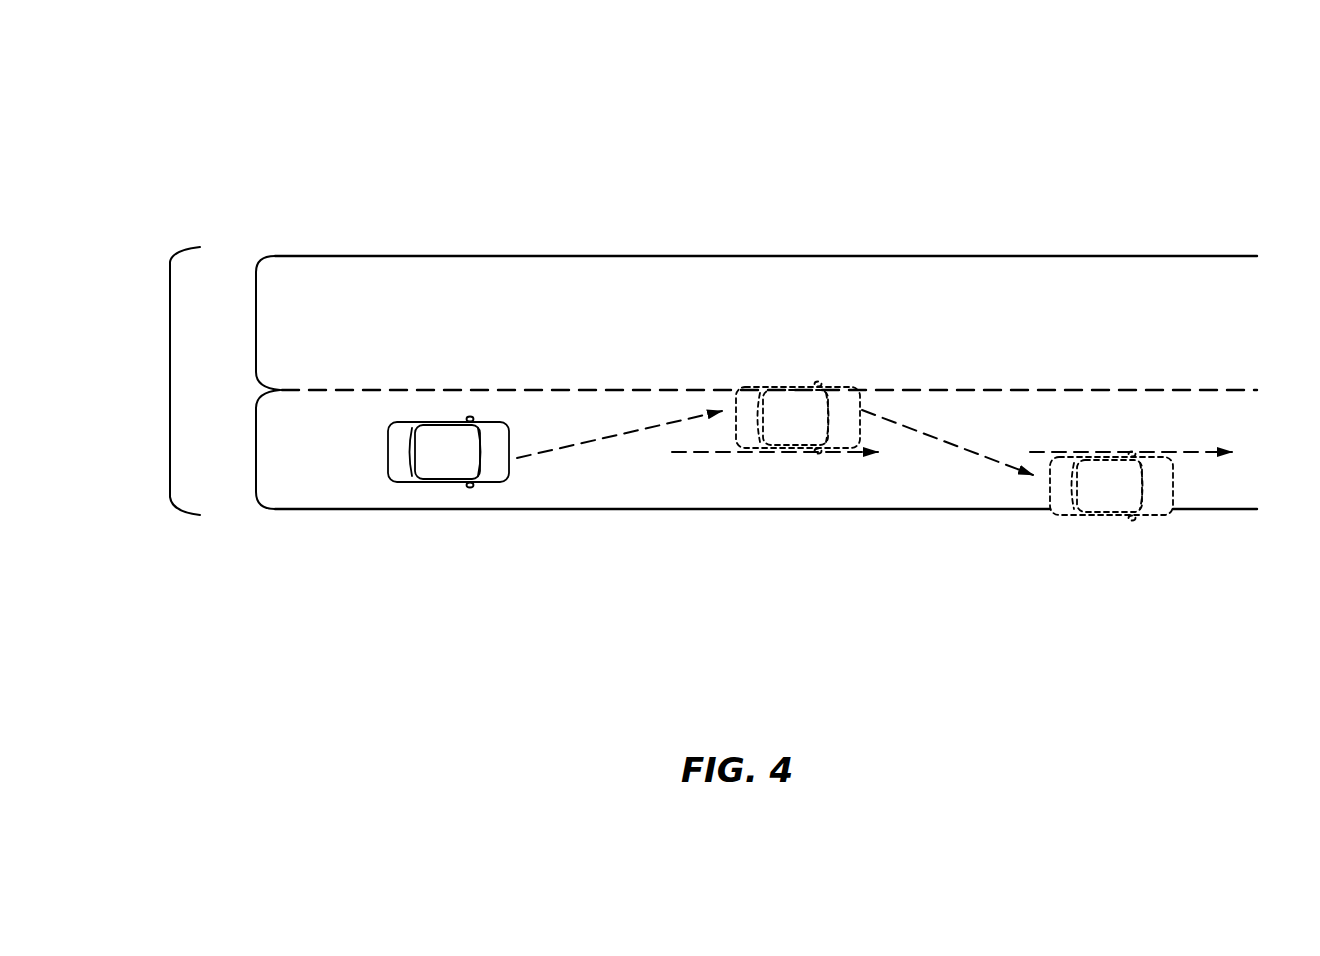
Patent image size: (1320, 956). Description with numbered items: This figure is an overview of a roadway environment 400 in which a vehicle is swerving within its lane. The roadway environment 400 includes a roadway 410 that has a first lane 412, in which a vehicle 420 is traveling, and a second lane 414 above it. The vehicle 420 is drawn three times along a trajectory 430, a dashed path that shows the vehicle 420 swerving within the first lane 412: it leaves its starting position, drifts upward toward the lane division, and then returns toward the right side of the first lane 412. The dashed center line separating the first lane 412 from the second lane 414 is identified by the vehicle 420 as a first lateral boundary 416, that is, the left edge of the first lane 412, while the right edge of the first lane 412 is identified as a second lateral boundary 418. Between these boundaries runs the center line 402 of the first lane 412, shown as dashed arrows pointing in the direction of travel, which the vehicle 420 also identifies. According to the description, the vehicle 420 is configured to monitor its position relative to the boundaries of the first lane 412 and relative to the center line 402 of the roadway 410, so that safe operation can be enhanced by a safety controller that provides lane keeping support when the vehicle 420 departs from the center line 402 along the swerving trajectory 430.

The roadway environment 400 is at (405, 158).
The center line 402 is at (683, 452).
The roadway 410 is at (170, 382).
The first lane 412 is at (255, 450).
The second lane 414 is at (255, 322).
The first lateral boundary 416 is at (1257, 390).
The second lateral boundary 418 is at (633, 510).
The vehicle 420 is at (780, 451).
The trajectory 430 is at (593, 439).